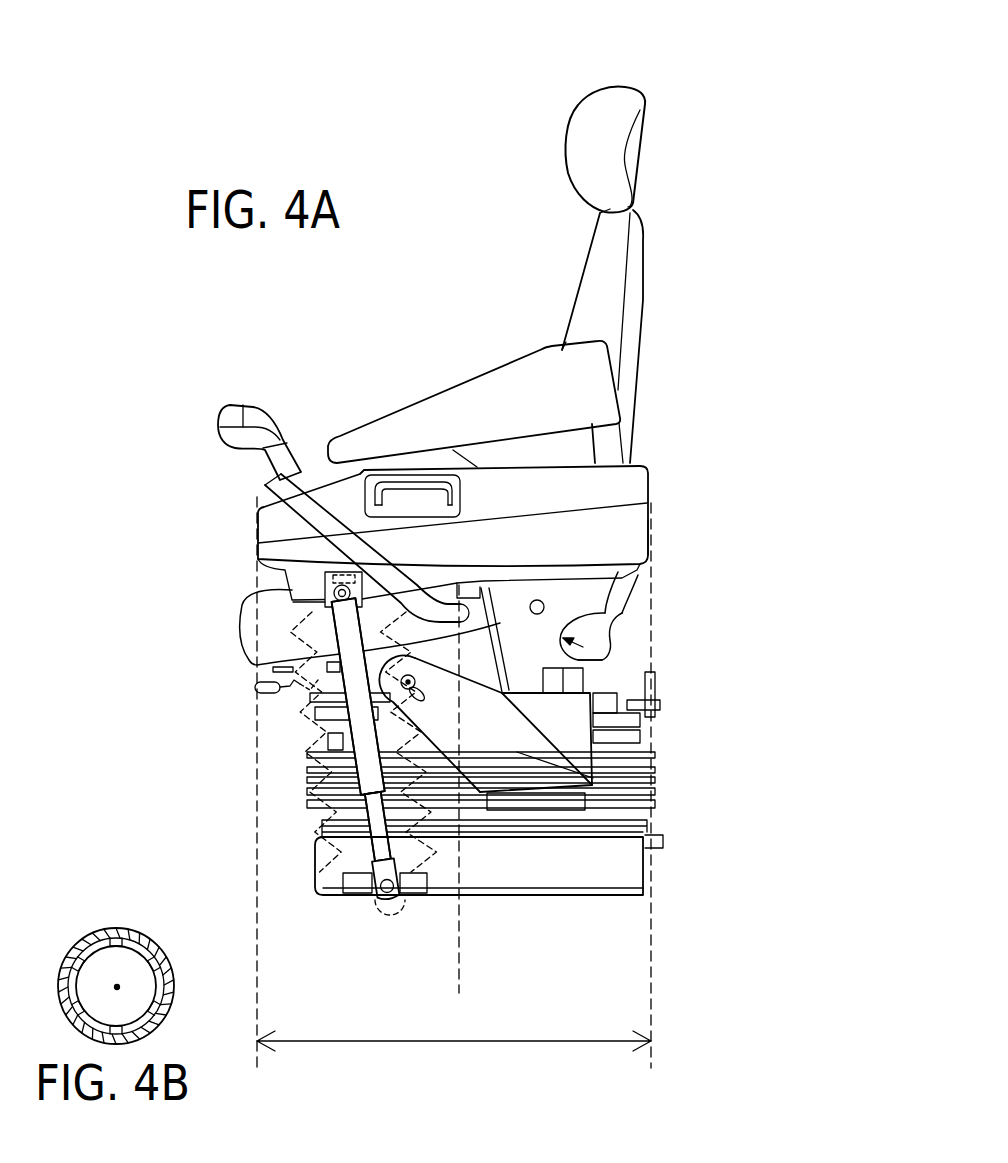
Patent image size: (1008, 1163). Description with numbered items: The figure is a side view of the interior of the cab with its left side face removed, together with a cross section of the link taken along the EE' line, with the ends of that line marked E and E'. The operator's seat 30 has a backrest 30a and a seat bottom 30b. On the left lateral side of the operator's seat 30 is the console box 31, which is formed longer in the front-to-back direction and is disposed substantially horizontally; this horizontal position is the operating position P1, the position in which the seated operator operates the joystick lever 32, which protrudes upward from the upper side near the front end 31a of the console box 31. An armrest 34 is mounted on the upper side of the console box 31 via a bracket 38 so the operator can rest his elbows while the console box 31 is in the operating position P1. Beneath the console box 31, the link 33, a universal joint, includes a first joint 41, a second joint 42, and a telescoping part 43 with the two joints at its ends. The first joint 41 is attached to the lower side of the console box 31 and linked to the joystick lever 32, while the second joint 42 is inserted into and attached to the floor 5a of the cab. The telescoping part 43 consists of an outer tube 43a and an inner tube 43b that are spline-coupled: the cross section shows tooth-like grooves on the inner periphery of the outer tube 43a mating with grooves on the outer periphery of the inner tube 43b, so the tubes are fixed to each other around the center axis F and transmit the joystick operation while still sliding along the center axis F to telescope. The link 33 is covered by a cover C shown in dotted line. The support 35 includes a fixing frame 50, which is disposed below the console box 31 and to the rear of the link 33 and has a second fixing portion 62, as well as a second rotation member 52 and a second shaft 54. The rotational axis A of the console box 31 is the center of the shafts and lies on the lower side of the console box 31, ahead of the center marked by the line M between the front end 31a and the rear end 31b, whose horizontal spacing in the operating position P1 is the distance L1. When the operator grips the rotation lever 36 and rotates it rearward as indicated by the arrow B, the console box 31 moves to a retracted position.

In FIG. 4A, the operator's seat 30 is at (502, 175).
In FIG. 4A, the backrest 30a is at (595, 227).
In FIG. 4A, the seat bottom 30b is at (240, 637).
In FIG. 4A, the console box 31 is at (613, 523).
In FIG. 4A, the front end 31a is at (257, 540).
In FIG. 4A, the rear end 31b is at (650, 527).
In FIG. 4A, the joystick lever 32 is at (236, 400).
In FIG. 4A, the link 33 is at (138, 688).
In FIG. 4A, the armrest 34 is at (487, 397).
In FIG. 4A, the support 35 is at (607, 654).
In FIG. 4A, the rotation lever 36 is at (257, 513).
In FIG. 4A, the bracket 38 is at (480, 458).
In FIG. 4A, the first joint 41 is at (335, 602).
In FIG. 4A, the second joint 42 is at (343, 874).
In FIG. 4A, the telescoping part 43 is at (192, 722).
In FIG. 4A, the outer tube 43a is at (372, 690).
In FIG. 4B, the outer tube 43a is at (163, 960).
In FIG. 4A, the inner tube 43b is at (332, 846).
In FIG. 4B, the inner tube 43b is at (103, 935).
In FIG. 4A, the fixing frame 50 is at (530, 780).
In FIG. 4A, the second rotation member 52 is at (578, 615).
In FIG. 4A, the second shaft 54 is at (415, 680).
In FIG. 4A, the second fixing portion 62 is at (583, 750).
In FIG. 4A, the floor 5a is at (527, 885).
In FIG. 4A, the rotational axis A is at (623, 707).
In FIG. 4A, the arrow B is at (757, 472).
In FIG. 4A, the cover C is at (427, 890).
In FIG. 4A, the EE' line E is at (280, 792).
In FIG. 4A, the EE' line E' is at (481, 766).
In FIG. 4B, the center axis F is at (118, 987).
In FIG. 4A, the line M is at (461, 808).
In FIG. 4A, the distance L1 is at (454, 786).
In FIG. 4A, the operating position P1 is at (342, 500).